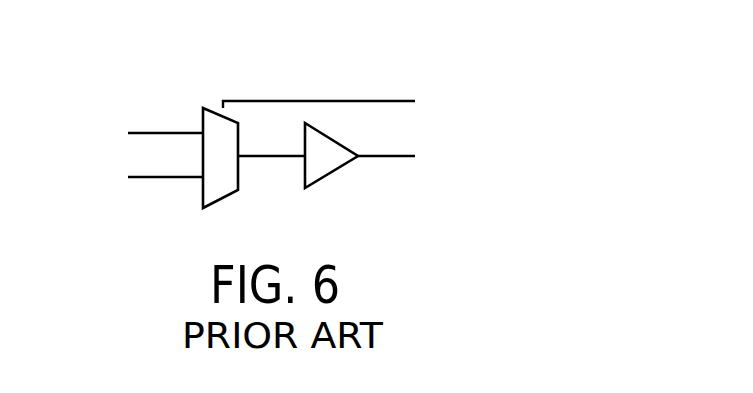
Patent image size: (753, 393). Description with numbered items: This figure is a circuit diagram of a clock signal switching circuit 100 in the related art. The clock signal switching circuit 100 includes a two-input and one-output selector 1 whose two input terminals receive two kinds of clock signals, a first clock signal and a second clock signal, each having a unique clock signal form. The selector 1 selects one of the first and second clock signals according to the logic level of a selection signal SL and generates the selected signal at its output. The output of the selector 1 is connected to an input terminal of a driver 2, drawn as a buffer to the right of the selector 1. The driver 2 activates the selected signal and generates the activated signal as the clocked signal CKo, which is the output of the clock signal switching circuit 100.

The clock signal switching circuit 100 is at (363, 62).
The selector 1 is at (213, 203).
The driver 2 is at (305, 185).